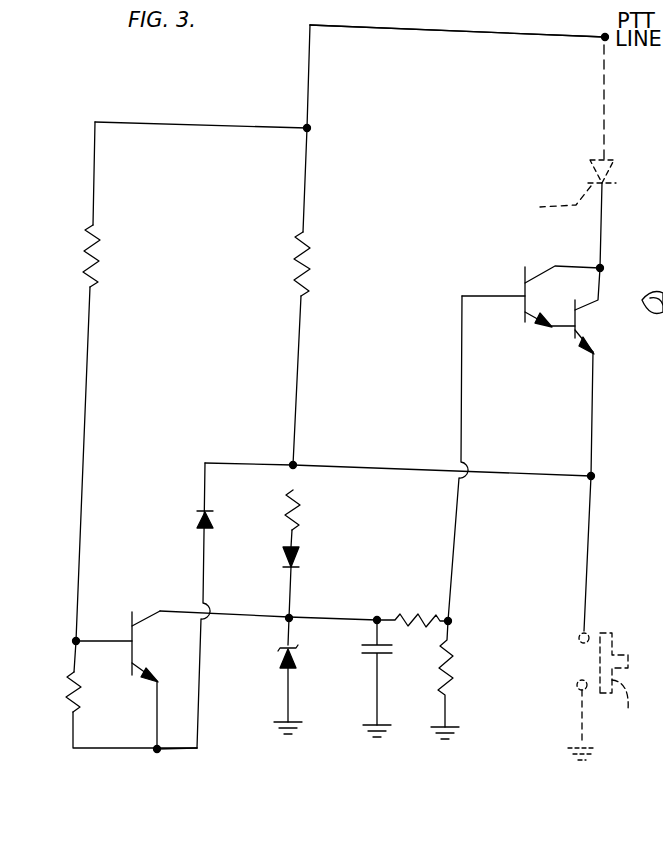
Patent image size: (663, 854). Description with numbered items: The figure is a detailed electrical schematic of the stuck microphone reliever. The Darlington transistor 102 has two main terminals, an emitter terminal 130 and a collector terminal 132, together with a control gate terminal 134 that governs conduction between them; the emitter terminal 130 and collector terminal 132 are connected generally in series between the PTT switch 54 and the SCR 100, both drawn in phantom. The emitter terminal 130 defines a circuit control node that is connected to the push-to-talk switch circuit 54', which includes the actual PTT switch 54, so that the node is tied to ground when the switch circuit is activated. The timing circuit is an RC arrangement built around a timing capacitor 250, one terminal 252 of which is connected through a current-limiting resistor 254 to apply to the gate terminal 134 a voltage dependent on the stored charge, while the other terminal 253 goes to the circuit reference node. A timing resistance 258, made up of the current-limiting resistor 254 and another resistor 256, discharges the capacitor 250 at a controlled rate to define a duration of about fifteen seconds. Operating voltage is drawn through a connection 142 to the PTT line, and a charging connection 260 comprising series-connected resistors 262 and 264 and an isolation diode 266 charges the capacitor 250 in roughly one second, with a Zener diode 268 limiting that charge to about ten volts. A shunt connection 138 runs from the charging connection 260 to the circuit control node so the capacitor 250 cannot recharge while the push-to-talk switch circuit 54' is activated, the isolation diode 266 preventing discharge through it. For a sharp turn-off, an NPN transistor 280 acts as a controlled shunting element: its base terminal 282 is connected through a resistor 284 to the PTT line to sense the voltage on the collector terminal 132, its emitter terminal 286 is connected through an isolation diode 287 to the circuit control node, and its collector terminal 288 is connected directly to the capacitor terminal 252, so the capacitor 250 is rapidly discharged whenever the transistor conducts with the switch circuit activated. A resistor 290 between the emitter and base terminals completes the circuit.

The connection 142 is at (360, 29).
The SCR 100 is at (591, 162).
The collector terminal 132 is at (600, 248).
The Darlington transistor 102 is at (568, 256).
The control gate terminal 134 is at (490, 292).
The emitter terminal 130 is at (591, 396).
The shunt connection 138 is at (387, 467).
The resistor 284 is at (97, 248).
The resistor 262 is at (312, 272).
The connection 260 is at (243, 373).
The isolation diode 287 is at (214, 523).
The resistor 264 is at (303, 517).
The isolation diode 266 is at (299, 559).
The NPN transistor 280 is at (141, 587).
The collector terminal 288 is at (181, 612).
The base terminal 282 is at (104, 642).
The resistor 290 is at (87, 686).
The emitter terminal 286 is at (158, 727).
The Zener diode 268 is at (284, 676).
The terminal 252 is at (376, 630).
The current-limiting resistor 254 is at (412, 612).
The timing capacitor 250 is at (390, 645).
The terminal 253 is at (377, 704).
The resistor 256 is at (461, 677).
The timing resistance 258 is at (523, 603).
The push-to-talk switch circuit 54' is at (608, 618).
The PTT switch 54 is at (619, 689).